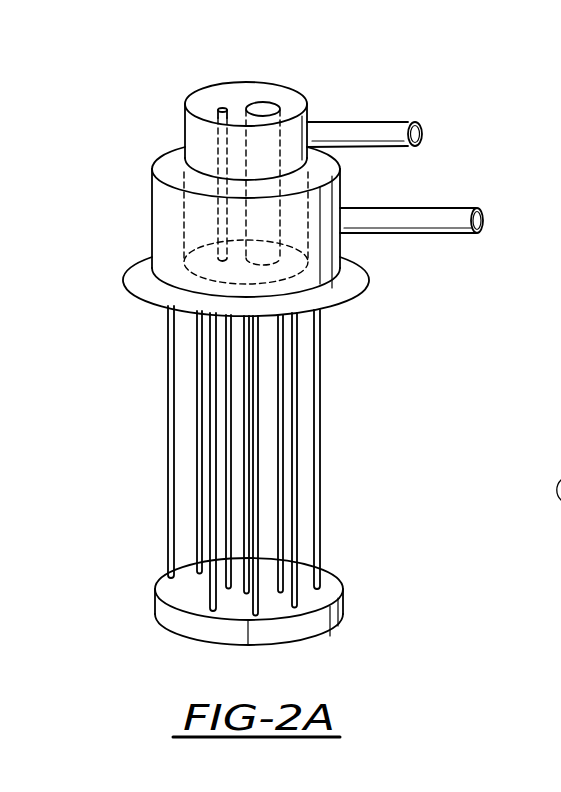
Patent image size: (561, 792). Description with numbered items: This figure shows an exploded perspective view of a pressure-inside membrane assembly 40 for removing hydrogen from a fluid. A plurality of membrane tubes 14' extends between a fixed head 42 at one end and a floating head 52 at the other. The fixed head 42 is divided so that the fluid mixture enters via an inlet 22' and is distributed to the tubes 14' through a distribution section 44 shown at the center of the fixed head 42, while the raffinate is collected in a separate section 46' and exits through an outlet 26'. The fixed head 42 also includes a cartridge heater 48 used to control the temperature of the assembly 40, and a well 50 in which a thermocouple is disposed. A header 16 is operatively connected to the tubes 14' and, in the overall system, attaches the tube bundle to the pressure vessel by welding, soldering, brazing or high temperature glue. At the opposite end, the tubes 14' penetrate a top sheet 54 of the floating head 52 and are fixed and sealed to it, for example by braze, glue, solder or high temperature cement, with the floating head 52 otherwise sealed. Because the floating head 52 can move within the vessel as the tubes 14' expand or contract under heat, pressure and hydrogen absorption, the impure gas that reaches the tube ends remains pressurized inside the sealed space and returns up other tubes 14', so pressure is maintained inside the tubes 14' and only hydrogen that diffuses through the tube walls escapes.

The assembly 40 is at (289, 348).
The fixed head 42 is at (130, 205).
The distribution section 44 is at (182, 158).
The section 46' is at (170, 228).
The cartridge heater 48 is at (280, 110).
The well 50 is at (222, 106).
The inlet 22' is at (418, 102).
The outlet 26' is at (450, 199).
The header 16 is at (362, 278).
The tubes 14' is at (207, 461).
The floating head 52 is at (155, 613).
The top sheet 54 is at (168, 593).